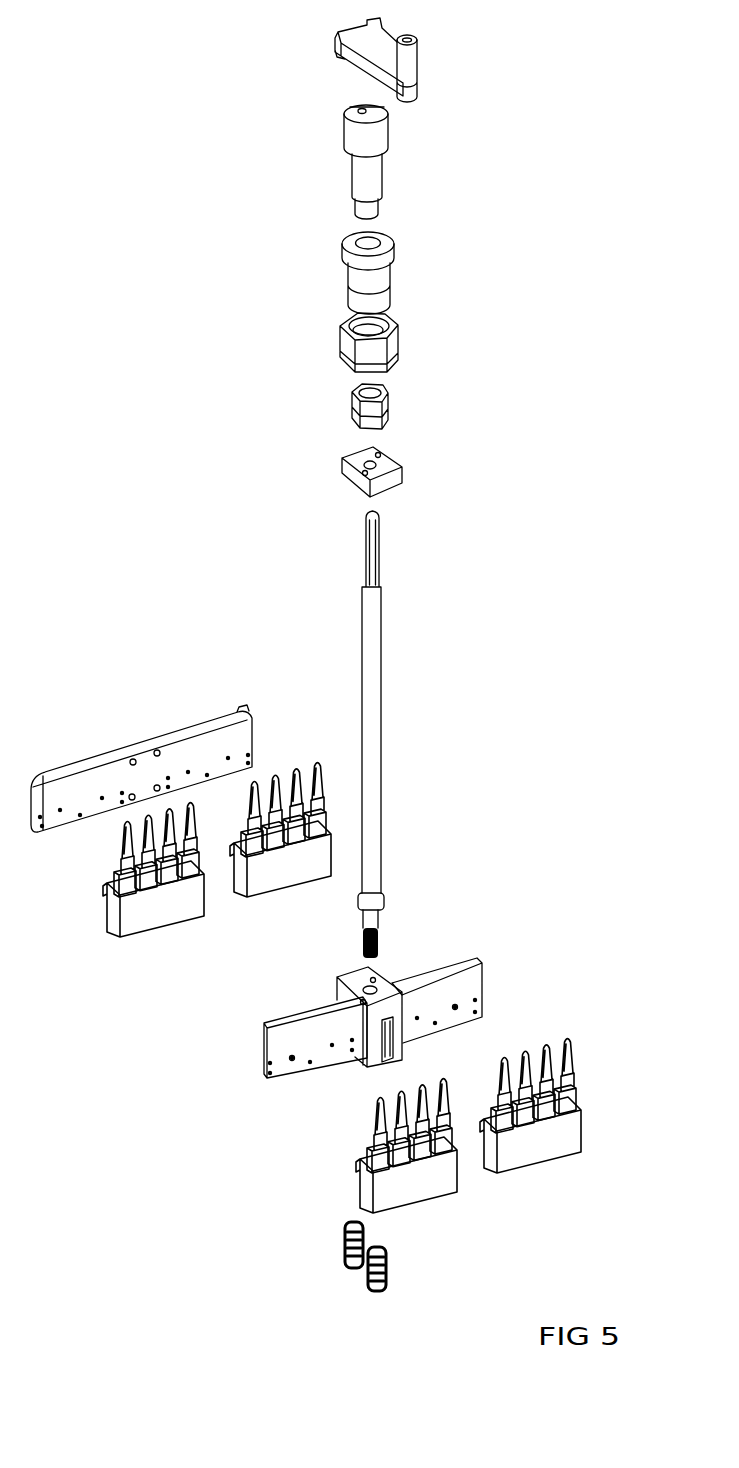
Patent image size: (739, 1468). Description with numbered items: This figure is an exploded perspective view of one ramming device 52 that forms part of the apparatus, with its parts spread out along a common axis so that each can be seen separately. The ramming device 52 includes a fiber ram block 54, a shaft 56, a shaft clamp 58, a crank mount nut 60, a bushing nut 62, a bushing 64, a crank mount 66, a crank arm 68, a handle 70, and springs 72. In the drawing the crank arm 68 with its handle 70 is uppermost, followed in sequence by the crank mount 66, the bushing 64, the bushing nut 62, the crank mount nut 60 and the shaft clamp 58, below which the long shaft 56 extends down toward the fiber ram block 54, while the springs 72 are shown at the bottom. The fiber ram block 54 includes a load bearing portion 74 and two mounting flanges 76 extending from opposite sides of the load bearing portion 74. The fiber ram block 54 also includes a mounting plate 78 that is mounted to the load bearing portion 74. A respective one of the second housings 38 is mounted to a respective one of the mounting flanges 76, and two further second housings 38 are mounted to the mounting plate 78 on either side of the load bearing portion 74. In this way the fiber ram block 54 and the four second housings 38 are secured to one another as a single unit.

The second housing 38 is at (163, 907).
The ramming device 52 is at (142, 162).
The fiber ram block 54 is at (398, 1029).
The shaft 56 is at (372, 712).
The shaft clamp 58 is at (393, 485).
The crank mount nut 60 is at (383, 419).
The bushing nut 62 is at (390, 358).
The bushing 64 is at (381, 289).
The crank mount 66 is at (372, 170).
The crank arm 68 is at (374, 40).
The handle 70 is at (418, 71).
The springs 72 is at (388, 1272).
The load bearing portion 74 is at (356, 968).
The mounting flanges 76 is at (457, 1000).
The mounting plate 78 is at (163, 737).